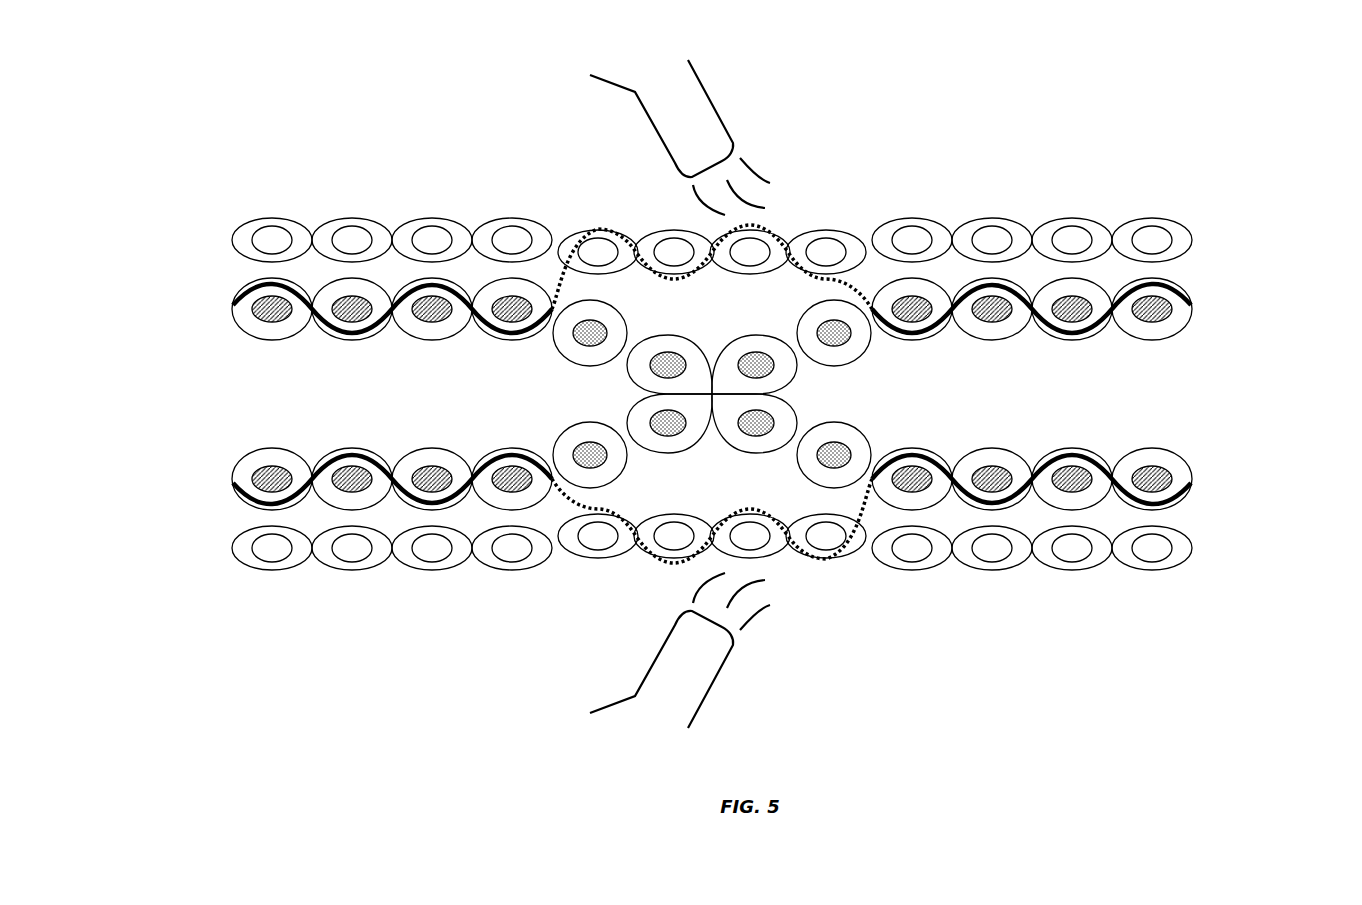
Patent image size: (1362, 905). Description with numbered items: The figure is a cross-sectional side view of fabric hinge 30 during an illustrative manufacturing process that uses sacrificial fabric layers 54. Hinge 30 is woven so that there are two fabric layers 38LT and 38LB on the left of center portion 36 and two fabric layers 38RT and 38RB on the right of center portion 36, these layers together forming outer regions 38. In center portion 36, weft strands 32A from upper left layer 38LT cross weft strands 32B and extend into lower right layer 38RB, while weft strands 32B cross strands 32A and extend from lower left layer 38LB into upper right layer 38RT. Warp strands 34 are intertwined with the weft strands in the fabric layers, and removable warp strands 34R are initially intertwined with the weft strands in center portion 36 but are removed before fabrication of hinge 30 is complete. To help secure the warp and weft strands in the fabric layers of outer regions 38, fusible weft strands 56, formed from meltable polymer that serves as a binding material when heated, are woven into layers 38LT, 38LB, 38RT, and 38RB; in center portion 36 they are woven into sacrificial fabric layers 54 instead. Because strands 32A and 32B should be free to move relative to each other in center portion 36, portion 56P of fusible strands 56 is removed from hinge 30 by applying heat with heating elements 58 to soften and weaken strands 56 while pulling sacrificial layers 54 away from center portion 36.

The fabric hinge 30 is at (186, 413).
The weft strands 32A is at (257, 286).
The weft strands 32B is at (1161, 273).
The warp strands 34 is at (337, 321).
The removable warp strands 34R is at (755, 356).
The center portion 36 is at (642, 188).
The outer regions 38 is at (332, 169).
The upper left fabric layer 38LT is at (209, 309).
The upper right fabric layer 38RT is at (1212, 329).
The lower left fabric layer 38LB is at (209, 492).
The lower right fabric layer 38RB is at (1227, 485).
The sacrificial fabric layers 54 is at (1216, 205).
The fusible weft strands 56 is at (247, 288).
The portion of fusible strands 56P is at (602, 231).
The heating elements 58 is at (703, 83).